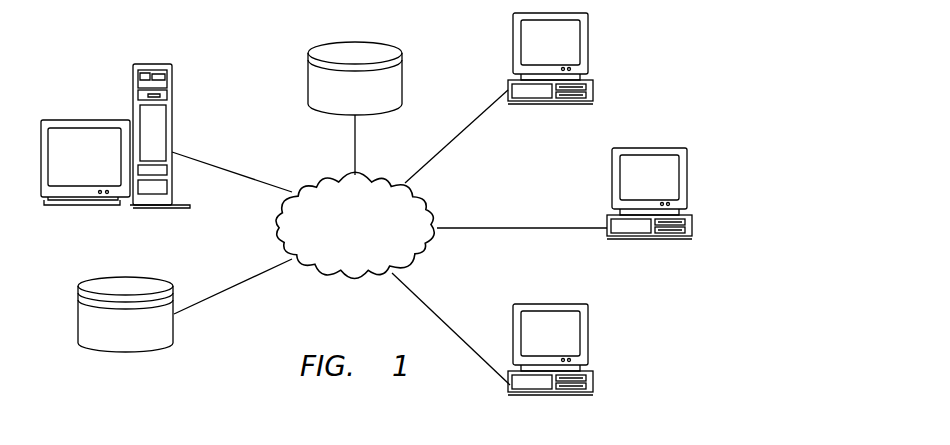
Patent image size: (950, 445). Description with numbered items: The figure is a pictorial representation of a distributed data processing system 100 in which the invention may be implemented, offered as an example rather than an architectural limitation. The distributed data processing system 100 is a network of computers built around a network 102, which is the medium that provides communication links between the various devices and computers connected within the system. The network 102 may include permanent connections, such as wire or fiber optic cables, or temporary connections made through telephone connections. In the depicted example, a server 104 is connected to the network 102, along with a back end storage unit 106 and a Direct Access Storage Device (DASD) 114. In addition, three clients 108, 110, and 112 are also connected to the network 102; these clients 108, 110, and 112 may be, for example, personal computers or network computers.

The distributed data processing system 100 is at (248, 72).
The network 102 is at (345, 280).
The server 104 is at (135, 84).
The back end storage unit 106 is at (78, 315).
The client 108 is at (588, 52).
The client 110 is at (688, 185).
The client 112 is at (590, 340).
The Direct Access Storage Device (DASD) 114 is at (405, 82).